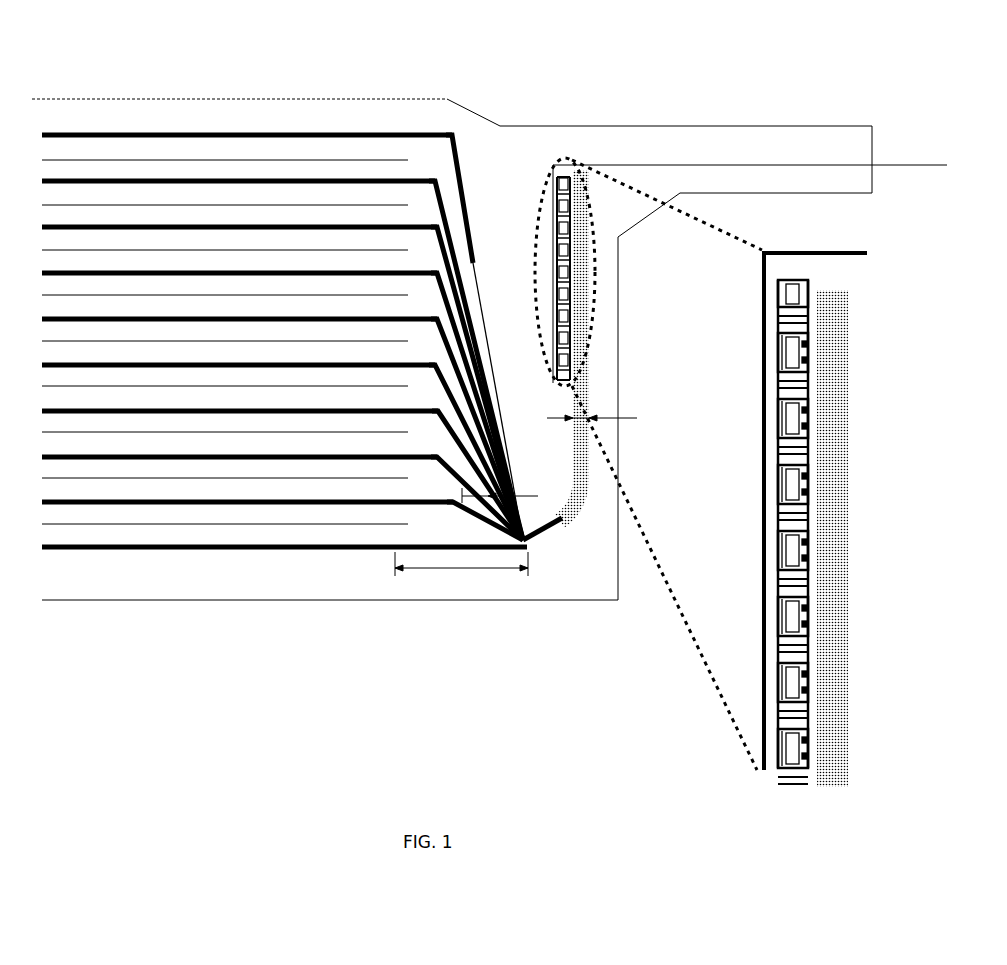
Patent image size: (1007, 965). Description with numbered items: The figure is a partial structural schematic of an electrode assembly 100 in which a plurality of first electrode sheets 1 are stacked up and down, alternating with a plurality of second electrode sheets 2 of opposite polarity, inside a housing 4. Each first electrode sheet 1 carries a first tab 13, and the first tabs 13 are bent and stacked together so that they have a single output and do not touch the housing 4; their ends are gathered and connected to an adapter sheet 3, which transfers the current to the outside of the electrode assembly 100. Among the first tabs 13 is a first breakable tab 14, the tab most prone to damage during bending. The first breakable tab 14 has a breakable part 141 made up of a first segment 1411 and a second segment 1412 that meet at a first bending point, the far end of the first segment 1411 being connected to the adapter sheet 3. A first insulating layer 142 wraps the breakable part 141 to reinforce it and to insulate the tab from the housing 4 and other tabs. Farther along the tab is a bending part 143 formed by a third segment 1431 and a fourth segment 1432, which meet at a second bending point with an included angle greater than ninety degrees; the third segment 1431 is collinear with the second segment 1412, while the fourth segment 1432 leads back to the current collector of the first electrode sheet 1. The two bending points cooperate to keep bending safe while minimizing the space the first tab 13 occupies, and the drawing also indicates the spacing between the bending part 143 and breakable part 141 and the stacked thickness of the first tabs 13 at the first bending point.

The electrode assembly 100 is at (60, 44).
The first electrode sheet 1 is at (172, 133).
The second electrode sheet 2 is at (128, 160).
The adapter sheet 3 is at (802, 165).
The housing 4 is at (213, 97).
The first tab 13 is at (597, 33).
The first breakable tab 14 is at (570, 692).
The breakable part 141 is at (587, 662).
The first segment 1411 is at (548, 540).
The second segment 1412 is at (497, 508).
The first insulating layer 142 is at (410, 133).
The bending part 143 is at (640, 64).
The third segment 1431 is at (465, 188).
The fourth segment 1432 is at (433, 133).